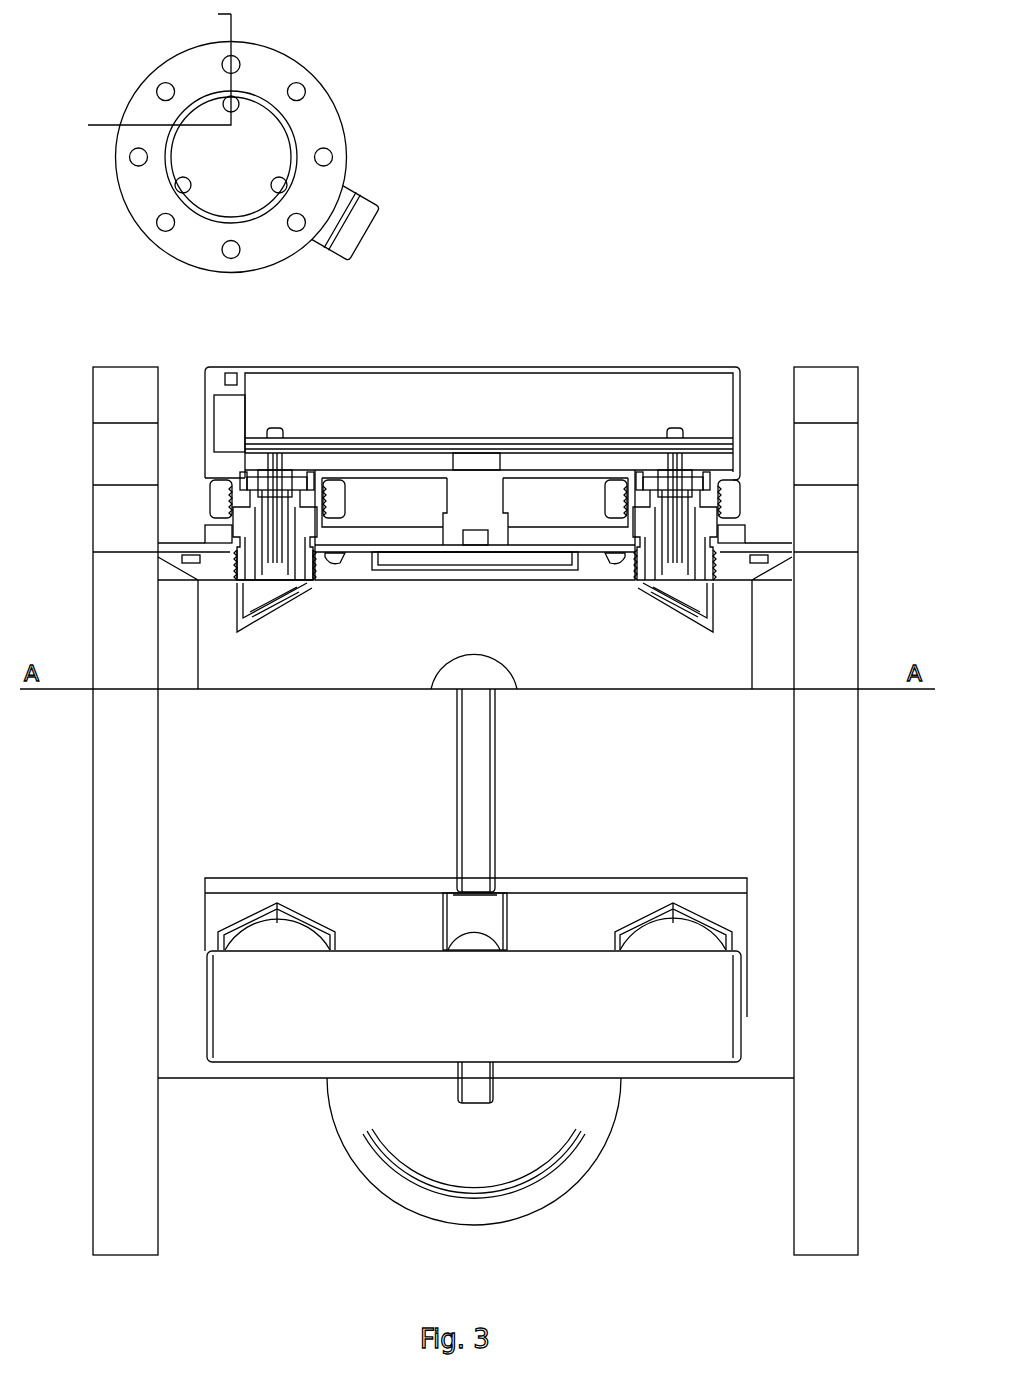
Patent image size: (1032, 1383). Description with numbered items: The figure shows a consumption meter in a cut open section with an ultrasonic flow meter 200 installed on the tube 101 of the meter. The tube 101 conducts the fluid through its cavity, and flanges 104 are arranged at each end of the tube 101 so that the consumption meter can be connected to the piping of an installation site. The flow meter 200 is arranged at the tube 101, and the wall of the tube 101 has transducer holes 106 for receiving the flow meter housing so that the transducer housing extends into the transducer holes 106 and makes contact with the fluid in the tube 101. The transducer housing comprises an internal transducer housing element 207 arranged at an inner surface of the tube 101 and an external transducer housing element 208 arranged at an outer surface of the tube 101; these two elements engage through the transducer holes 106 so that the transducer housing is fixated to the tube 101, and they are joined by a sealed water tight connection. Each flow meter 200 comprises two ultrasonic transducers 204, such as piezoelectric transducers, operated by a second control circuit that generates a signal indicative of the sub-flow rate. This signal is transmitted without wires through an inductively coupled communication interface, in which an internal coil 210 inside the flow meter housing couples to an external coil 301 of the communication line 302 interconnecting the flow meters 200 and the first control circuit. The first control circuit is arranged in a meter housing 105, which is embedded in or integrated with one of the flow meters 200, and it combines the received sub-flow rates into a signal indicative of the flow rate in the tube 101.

The tube 101 is at (290, 752).
The flanges 104 is at (118, 785).
The meter housing 105 is at (486, 1140).
The transducer holes 106 is at (718, 538).
The ultrasonic flow meter 200 is at (617, 366).
The ultrasonic transducers 204 is at (253, 603).
The internal transducer housing element 207 is at (223, 572).
The external transducer housing element 208 is at (240, 520).
The internal coil 210 is at (478, 462).
The external coil 301 is at (472, 497).
The communication line 302 is at (480, 772).